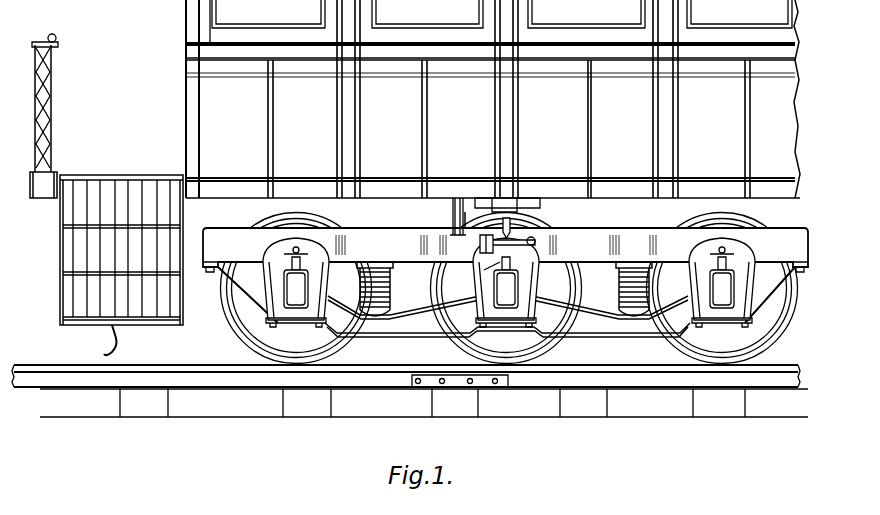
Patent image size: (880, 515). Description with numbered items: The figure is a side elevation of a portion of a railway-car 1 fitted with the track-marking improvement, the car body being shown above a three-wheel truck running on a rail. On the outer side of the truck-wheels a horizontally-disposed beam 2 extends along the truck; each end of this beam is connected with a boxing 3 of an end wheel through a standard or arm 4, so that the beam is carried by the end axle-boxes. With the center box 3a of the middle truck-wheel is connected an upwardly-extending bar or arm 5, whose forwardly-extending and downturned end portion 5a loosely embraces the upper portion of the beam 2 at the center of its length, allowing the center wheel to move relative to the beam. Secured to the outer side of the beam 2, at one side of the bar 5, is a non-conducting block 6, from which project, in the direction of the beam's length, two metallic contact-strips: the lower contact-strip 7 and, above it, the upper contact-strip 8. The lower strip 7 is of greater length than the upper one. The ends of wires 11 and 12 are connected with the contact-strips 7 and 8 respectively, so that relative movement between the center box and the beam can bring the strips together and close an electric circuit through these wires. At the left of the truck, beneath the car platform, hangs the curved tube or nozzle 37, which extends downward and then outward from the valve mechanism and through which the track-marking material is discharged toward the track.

The railway-car 1 is at (220, 160).
The beam 2 is at (418, 246).
The boxing 3 is at (297, 290).
The center box 3a is at (505, 302).
The standard or arm 4 is at (270, 250).
The bar or arm 5 is at (512, 268).
The downturned end portion 5a is at (525, 198).
The non-conducting block 6 is at (480, 246).
The lower contact-strip 7 is at (487, 276).
The upper contact-strip 8 is at (512, 236).
The wire 11 is at (441, 197).
The wire 12 is at (470, 197).
The curved tube or nozzle 37 is at (119, 345).